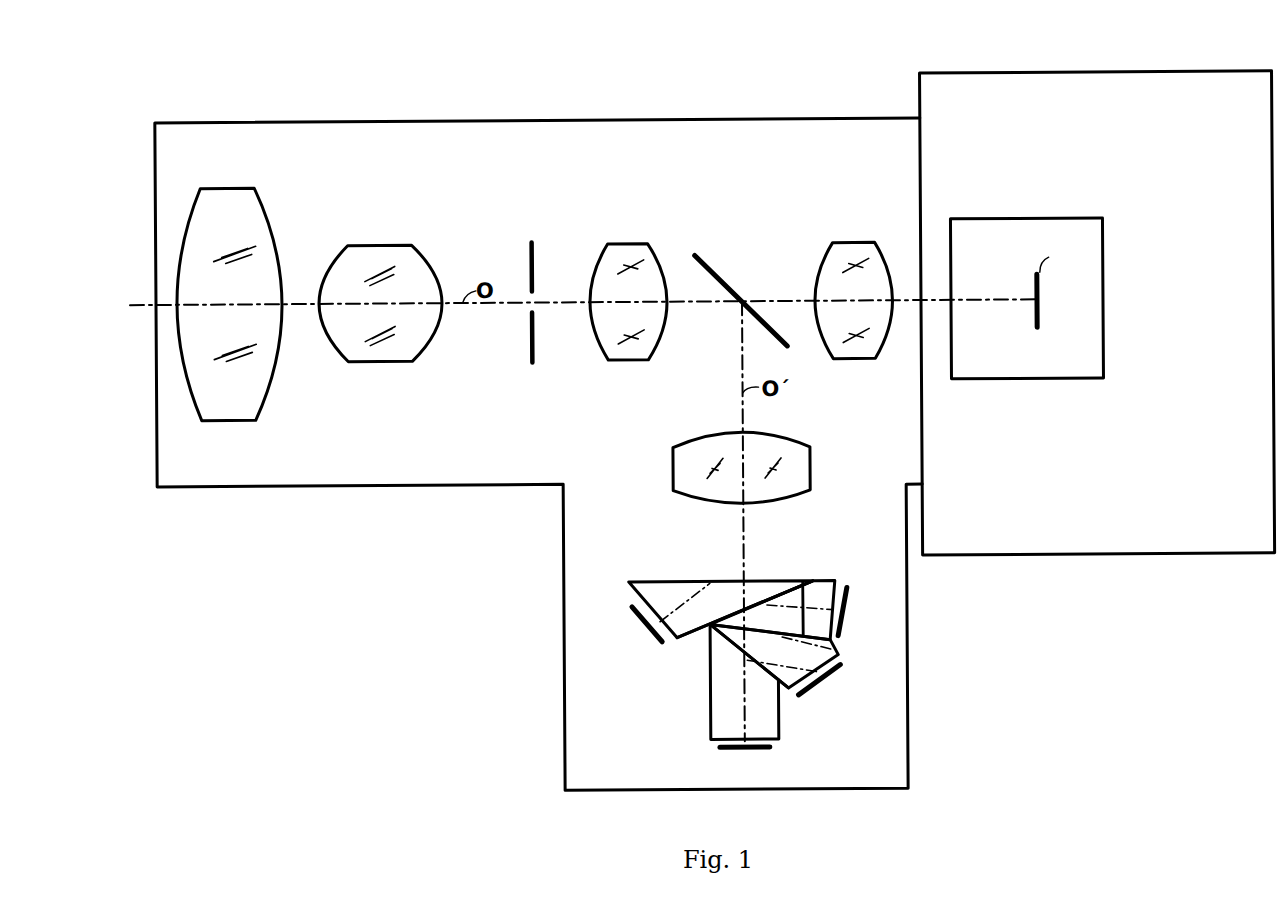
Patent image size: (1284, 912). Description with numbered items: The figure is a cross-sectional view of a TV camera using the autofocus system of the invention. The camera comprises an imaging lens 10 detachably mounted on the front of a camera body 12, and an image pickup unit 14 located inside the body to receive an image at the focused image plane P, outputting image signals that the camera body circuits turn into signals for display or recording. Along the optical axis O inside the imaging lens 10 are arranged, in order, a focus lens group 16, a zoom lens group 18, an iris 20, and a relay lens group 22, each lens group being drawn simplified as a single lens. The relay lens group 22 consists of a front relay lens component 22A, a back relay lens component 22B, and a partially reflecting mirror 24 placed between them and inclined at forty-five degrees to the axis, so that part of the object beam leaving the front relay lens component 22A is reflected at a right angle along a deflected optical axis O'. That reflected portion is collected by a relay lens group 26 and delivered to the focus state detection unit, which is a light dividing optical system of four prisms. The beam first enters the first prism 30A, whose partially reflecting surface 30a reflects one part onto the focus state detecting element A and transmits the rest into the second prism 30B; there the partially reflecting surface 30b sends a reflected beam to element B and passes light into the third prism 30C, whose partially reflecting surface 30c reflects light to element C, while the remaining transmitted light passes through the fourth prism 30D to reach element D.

The imaging lens 10 is at (790, 120).
The camera body 12 is at (1121, 77).
The image pickup unit 14 is at (1060, 224).
The focus lens group 16 is at (237, 183).
The zoom lens group 18 is at (380, 231).
The iris 20 is at (534, 233).
The relay lens group 22 is at (743, 256).
The front relay lens component 22A is at (631, 246).
The back relay lens component 22B is at (853, 276).
The partially reflecting mirror 24 is at (720, 278).
The relay lens group 26 is at (809, 468).
The first prism 30A is at (661, 589).
The partially reflecting surface 30a is at (725, 601).
The partially reflecting surface 30b is at (801, 601).
The second prism 30B is at (828, 582).
The partially reflecting surface 30c is at (708, 638).
The third prism 30C is at (835, 647).
The fourth prism 30D is at (763, 721).